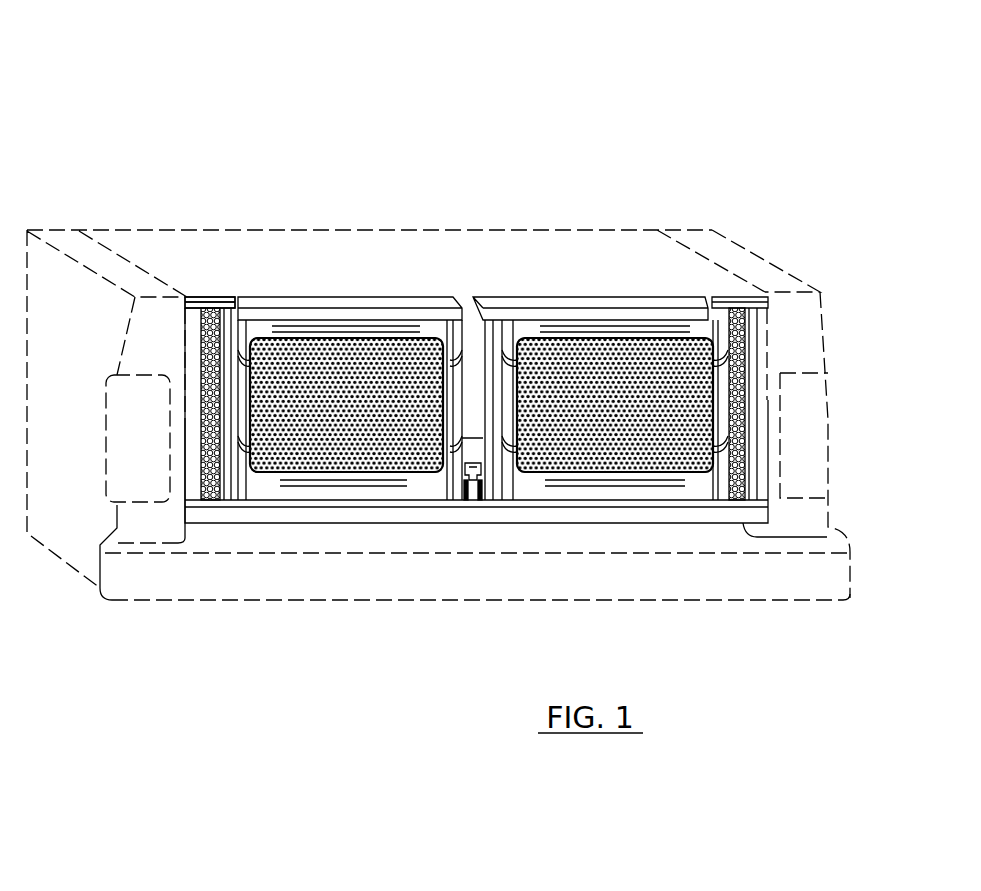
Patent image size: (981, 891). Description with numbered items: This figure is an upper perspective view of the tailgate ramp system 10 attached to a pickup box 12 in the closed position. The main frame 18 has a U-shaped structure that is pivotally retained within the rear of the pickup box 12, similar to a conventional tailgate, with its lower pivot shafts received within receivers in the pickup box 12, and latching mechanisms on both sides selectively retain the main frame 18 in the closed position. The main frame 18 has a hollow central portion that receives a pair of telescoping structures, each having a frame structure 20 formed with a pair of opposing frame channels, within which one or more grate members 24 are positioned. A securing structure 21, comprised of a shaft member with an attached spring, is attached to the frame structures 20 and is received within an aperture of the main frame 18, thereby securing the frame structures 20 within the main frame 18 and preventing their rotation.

The tailgate ramp system 10 is at (477, 367).
The pickup box 12 is at (240, 218).
The main frame 18 is at (188, 300).
The frame structure 20 is at (530, 300).
The securing structure 21 is at (460, 500).
The grate member 24 is at (410, 340).